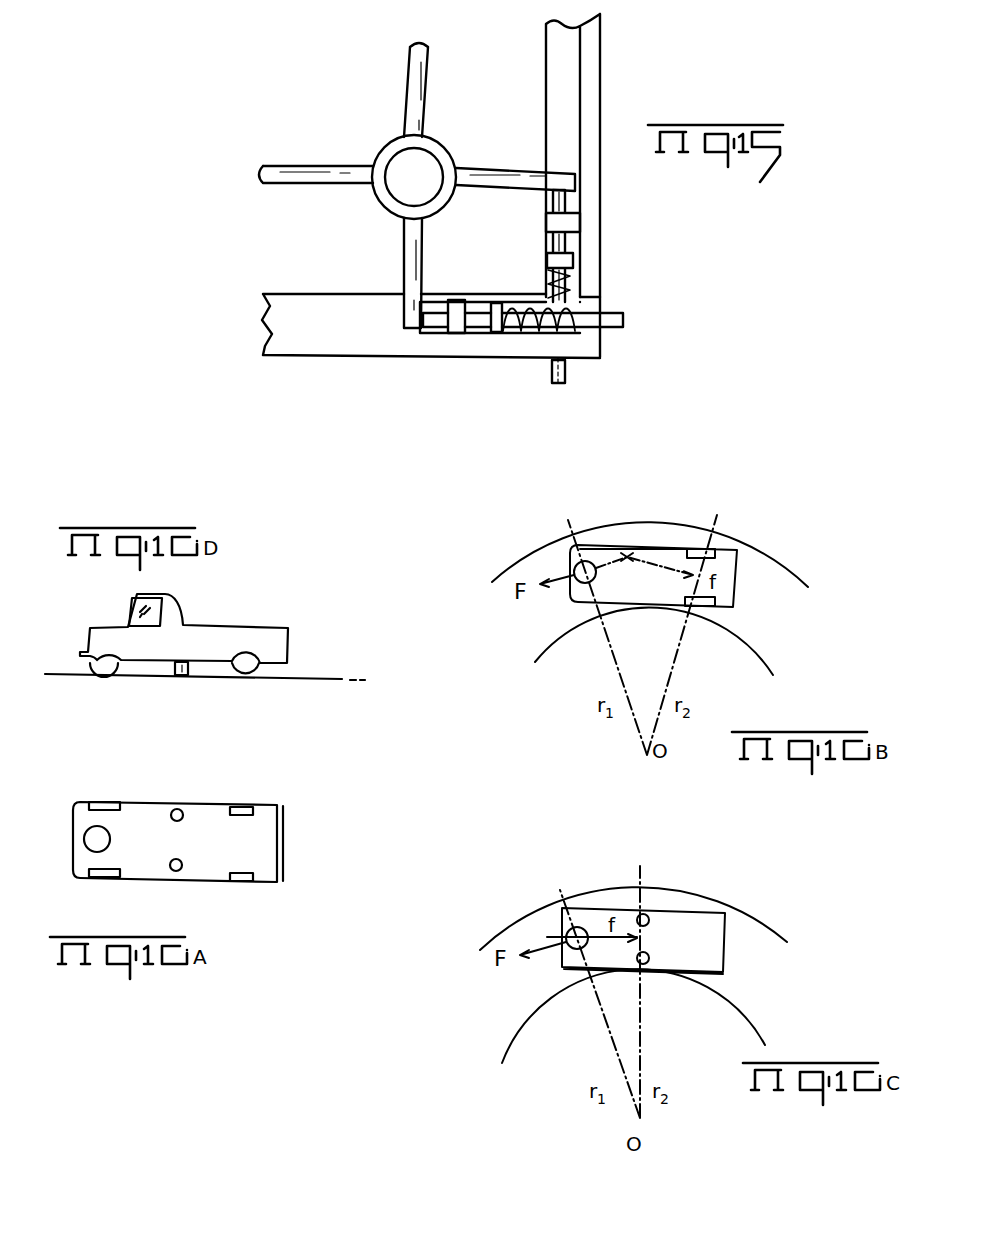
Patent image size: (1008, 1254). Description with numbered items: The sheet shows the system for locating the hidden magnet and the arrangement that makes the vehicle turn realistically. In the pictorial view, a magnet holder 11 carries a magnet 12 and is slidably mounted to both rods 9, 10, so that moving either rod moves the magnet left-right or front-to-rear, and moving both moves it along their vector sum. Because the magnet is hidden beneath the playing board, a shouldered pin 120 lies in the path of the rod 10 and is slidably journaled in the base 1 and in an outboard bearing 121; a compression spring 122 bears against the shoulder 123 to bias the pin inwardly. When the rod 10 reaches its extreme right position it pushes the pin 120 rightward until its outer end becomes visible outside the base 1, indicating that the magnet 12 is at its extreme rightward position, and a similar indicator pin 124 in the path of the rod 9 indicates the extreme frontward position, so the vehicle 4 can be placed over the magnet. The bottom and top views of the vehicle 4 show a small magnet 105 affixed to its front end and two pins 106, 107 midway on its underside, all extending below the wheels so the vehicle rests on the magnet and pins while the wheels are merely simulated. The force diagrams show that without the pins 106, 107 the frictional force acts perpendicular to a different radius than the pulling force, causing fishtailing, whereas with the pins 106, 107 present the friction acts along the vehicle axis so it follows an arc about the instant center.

In FIG. 15, the base 1 is at (596, 73).
In FIG. 15, the rod 9 is at (303, 168).
In FIG. 15, the rod 10 is at (413, 78).
In FIG. 15, the magnet holder 11 is at (387, 197).
In FIG. 15, the magnet 12 is at (405, 163).
In FIG. 15, the shouldered pin 120 is at (624, 319).
In FIG. 15, the outboard bearing 121 is at (457, 335).
In FIG. 15, the compression spring 122 is at (527, 305).
In FIG. 15, the shoulder 123 is at (496, 333).
In FIG. 15, the indicator pin 124 is at (566, 373).
In FIG. 16D, the vehicle 4 is at (233, 630).
In FIG. 16A, the vehicle 4 is at (137, 802).
In FIG. 16D, the small magnet 105 is at (102, 675).
In FIG. 16A, the small magnet 105 is at (83, 841).
In FIG. 16D, the pin 106 is at (182, 677).
In FIG. 16A, the pin 106 is at (183, 809).
In FIG. 16A, the pin 107 is at (177, 871).